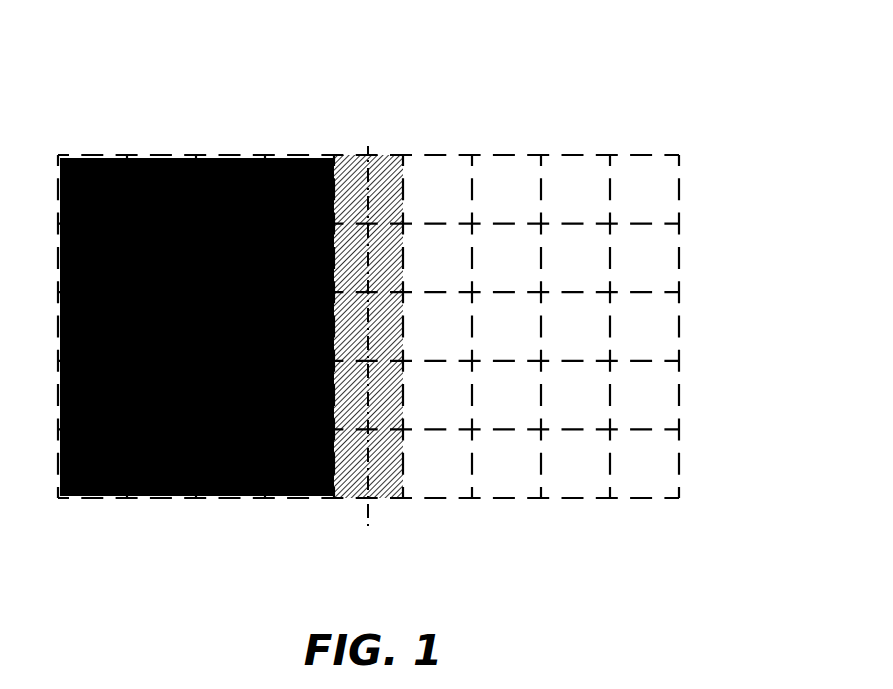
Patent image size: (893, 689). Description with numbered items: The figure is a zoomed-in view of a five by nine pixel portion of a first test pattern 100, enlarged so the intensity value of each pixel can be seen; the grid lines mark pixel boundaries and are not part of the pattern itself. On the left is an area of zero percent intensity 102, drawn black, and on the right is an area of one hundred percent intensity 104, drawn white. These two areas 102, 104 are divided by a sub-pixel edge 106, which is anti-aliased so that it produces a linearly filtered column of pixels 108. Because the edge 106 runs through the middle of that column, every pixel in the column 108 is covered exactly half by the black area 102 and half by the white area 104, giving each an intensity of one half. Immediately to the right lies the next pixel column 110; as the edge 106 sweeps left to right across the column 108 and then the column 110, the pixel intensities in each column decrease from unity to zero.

The first test pattern 100 is at (751, 126).
The area of 0% intensity 102 is at (58, 140).
The area of 100% intensity 104 is at (679, 140).
The sub-pixel edge 106 is at (368, 135).
The linearly filtered column of pixels 108 is at (403, 530).
The next pixel column 110 is at (403, 530).